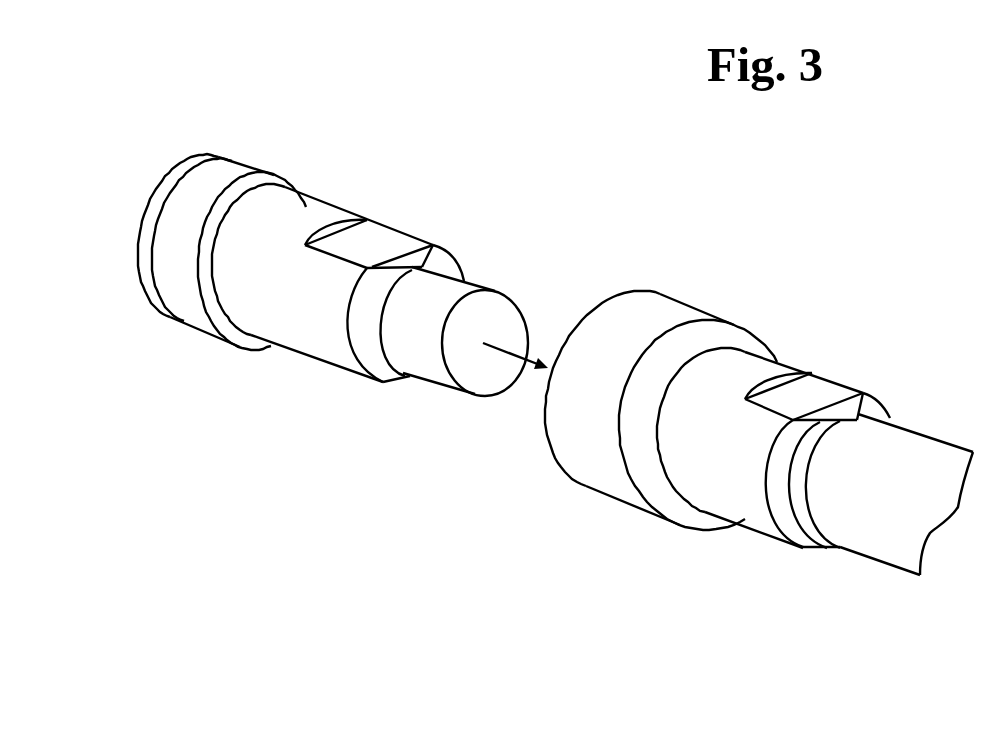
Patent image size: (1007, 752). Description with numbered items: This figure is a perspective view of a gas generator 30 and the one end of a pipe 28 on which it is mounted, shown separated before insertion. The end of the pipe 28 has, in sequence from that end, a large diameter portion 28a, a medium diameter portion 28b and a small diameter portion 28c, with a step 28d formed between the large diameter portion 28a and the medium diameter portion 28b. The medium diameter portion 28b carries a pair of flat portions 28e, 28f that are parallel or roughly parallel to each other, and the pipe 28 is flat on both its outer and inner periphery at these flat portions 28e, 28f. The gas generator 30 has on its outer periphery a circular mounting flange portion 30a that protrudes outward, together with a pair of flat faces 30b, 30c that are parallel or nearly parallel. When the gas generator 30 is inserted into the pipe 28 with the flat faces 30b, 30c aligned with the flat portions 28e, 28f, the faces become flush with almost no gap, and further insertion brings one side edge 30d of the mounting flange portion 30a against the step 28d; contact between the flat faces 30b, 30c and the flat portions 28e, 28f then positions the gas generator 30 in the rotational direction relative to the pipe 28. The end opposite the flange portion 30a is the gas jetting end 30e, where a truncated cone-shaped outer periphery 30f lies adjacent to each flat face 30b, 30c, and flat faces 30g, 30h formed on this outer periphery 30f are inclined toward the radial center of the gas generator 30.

The pipe 28 is at (786, 300).
The large diameter portion 28a is at (666, 312).
The medium diameter portion 28b is at (702, 500).
The small diameter portion 28c is at (868, 540).
The step 28d is at (643, 462).
The flat portion 28e is at (822, 392).
The flat portion 28f is at (768, 540).
The gas generator 30 is at (257, 363).
The mounting flange portion 30a is at (242, 166).
The flat face 30b is at (382, 240).
The flat face 30c is at (340, 370).
The side edge 30d is at (297, 186).
The gas jetting end 30e is at (484, 372).
The outer periphery 30f is at (360, 313).
The flat face 30g is at (407, 252).
The flat face 30h is at (402, 383).